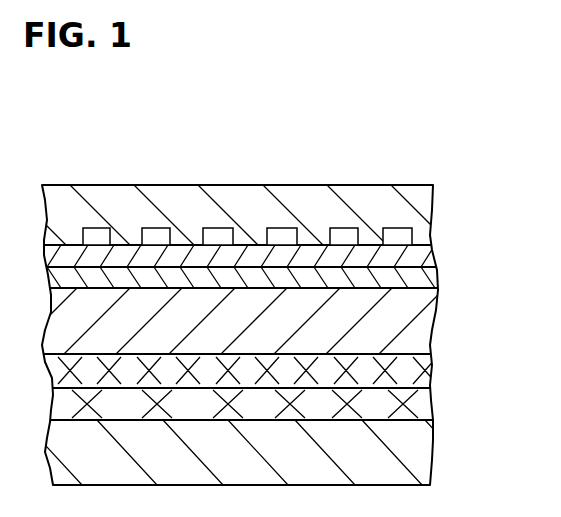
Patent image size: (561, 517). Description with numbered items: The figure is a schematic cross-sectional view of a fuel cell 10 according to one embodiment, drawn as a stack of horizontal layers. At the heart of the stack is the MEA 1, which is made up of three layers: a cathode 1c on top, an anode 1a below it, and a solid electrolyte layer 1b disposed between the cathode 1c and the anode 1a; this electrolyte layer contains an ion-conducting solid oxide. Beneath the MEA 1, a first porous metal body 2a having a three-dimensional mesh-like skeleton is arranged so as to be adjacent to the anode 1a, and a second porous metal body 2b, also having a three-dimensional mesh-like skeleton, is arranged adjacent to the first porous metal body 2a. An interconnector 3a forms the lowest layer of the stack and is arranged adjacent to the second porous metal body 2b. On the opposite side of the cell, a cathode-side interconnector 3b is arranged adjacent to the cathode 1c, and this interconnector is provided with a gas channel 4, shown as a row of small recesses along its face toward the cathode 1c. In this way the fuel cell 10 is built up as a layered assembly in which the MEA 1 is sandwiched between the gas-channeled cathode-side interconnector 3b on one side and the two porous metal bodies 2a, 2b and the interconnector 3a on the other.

The fuel cell 10 is at (281, 157).
The MEA 1 is at (267, 299).
The anode 1a is at (251, 321).
The solid electrolyte layer 1b is at (413, 282).
The cathode 1c is at (415, 257).
The first porous metal body 2a is at (413, 377).
The second porous metal body 2b is at (413, 408).
The interconnector 3a is at (413, 458).
The cathode-side interconnector 3b is at (415, 213).
The gas channel 4 is at (98, 234).